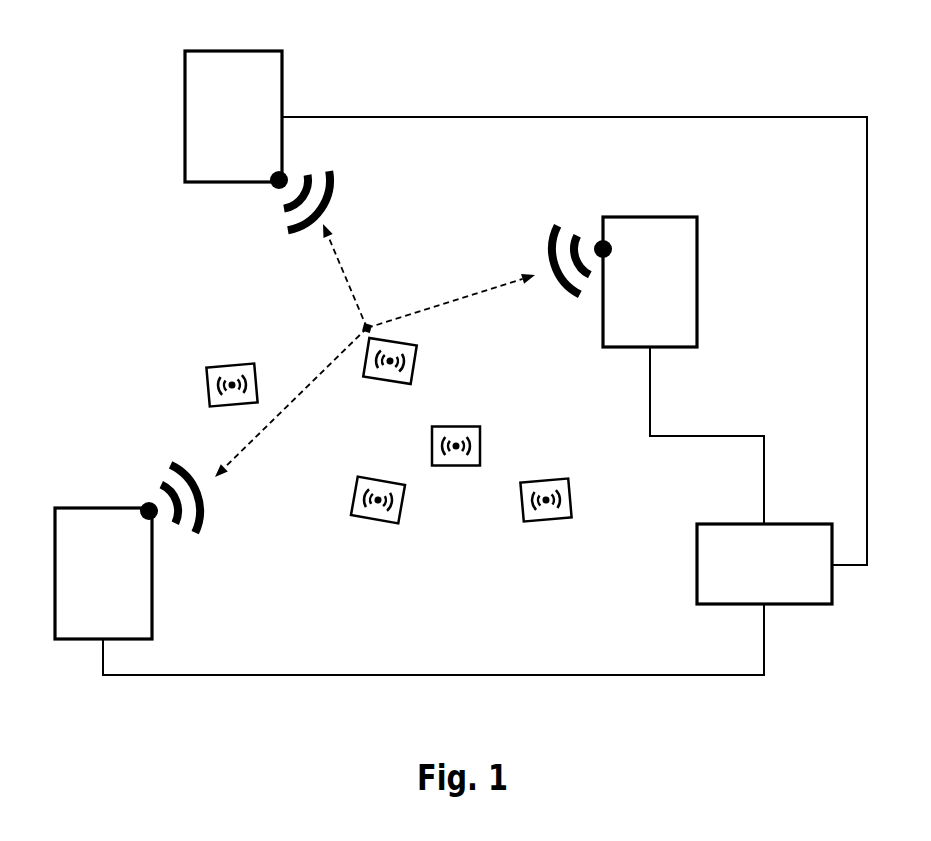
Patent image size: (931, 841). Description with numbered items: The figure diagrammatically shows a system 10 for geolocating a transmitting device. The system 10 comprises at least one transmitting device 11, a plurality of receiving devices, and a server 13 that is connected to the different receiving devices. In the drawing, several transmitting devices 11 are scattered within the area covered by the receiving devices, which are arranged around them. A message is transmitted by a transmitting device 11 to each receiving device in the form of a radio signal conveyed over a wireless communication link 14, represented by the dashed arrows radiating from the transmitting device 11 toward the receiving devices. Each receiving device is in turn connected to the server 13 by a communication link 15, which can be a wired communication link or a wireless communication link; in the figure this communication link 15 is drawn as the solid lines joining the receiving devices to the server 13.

The system for geolocating 10 is at (123, 49).
The transmitting device 11 is at (417, 352).
The server 13 is at (697, 576).
The wireless communication link 14 is at (473, 292).
The communication link 15 is at (612, 117).